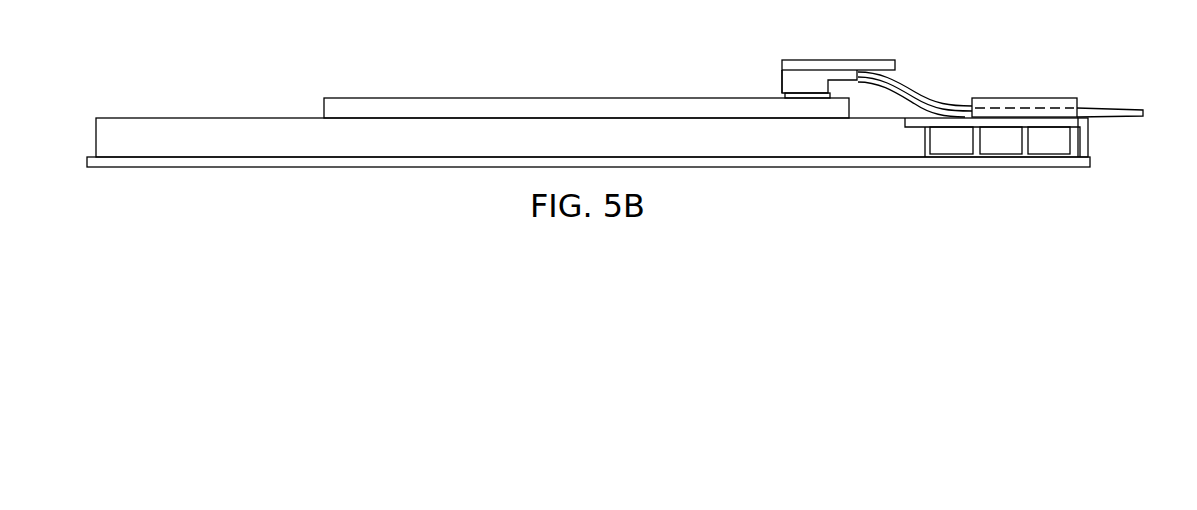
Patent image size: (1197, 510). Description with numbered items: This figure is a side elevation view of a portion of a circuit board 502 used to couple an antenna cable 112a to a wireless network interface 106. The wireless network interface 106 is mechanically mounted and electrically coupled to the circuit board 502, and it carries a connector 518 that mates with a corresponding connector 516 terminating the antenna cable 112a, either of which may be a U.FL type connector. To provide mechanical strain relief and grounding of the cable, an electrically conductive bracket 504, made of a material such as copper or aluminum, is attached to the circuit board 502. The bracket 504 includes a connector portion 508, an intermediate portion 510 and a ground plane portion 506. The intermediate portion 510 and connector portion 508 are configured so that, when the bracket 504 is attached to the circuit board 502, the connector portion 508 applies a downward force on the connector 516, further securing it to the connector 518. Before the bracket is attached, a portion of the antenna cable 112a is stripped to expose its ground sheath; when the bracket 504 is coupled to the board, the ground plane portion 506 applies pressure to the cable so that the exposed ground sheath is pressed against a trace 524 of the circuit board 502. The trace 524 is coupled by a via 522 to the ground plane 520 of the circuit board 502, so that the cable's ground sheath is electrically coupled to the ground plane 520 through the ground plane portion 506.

The circuit board 502 is at (118, 118).
The ground plane 520 is at (212, 167).
The wireless network interface 106 is at (585, 98).
The connector 518 is at (805, 99).
The bracket 504 is at (805, 60).
The connector portion 508 is at (873, 60).
The connector 516 is at (782, 73).
The intermediate portion 510 is at (898, 77).
The ground plane portion 506 is at (1053, 98).
The trace 524 is at (1007, 107).
The antenna cable 112a is at (1108, 108).
The via 522 is at (978, 156).